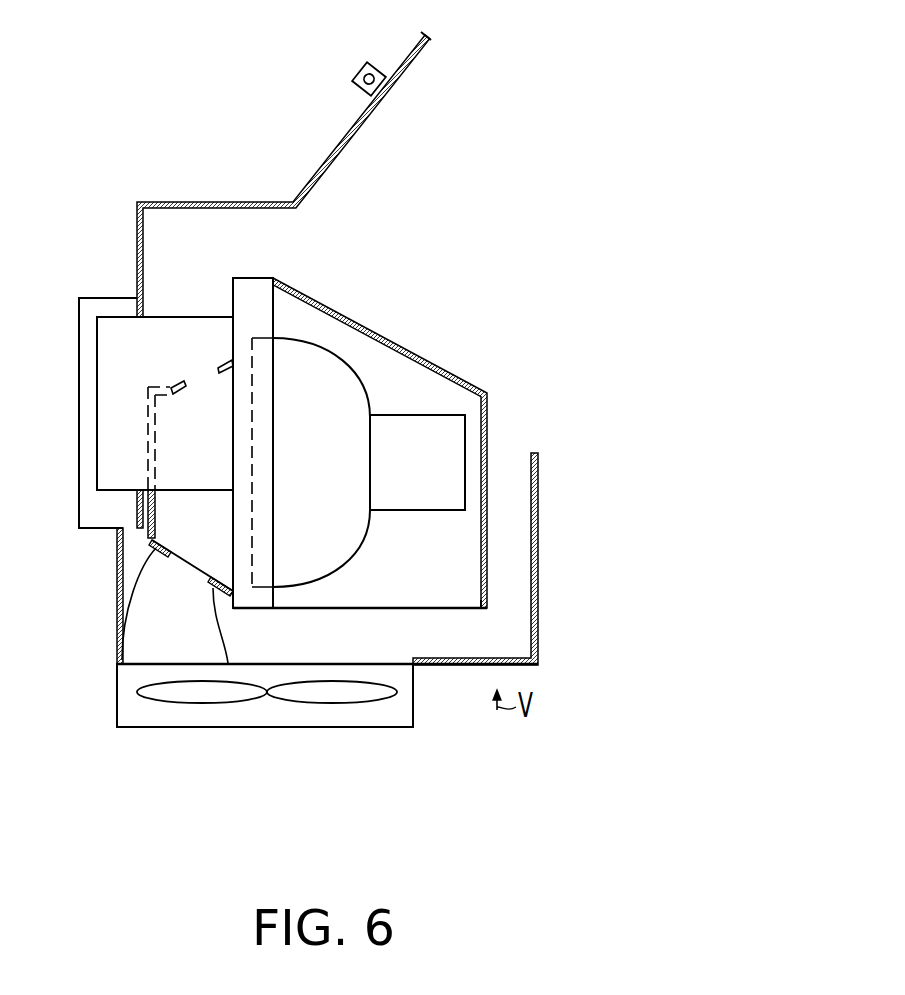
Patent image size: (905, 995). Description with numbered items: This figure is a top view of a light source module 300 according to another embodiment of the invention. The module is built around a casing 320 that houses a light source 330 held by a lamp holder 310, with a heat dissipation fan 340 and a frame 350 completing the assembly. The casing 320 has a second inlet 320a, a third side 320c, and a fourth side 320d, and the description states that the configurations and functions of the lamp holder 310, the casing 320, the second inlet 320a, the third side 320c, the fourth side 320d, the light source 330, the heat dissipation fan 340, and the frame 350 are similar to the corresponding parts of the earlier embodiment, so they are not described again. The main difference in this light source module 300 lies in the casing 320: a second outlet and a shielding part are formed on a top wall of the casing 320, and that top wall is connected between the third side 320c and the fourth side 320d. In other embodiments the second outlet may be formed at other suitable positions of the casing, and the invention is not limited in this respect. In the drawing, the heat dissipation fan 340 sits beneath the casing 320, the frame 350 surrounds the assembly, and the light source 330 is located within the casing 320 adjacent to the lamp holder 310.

The light source module 300 is at (582, 403).
The lamp holder 310 is at (252, 290).
The casing 320 is at (423, 529).
The second inlet 320a is at (479, 608).
The third side 320c is at (292, 612).
The fourth side 320d is at (368, 331).
The light source 330 is at (330, 545).
The heat dissipation fan 340 is at (158, 728).
The frame 350 is at (117, 568).